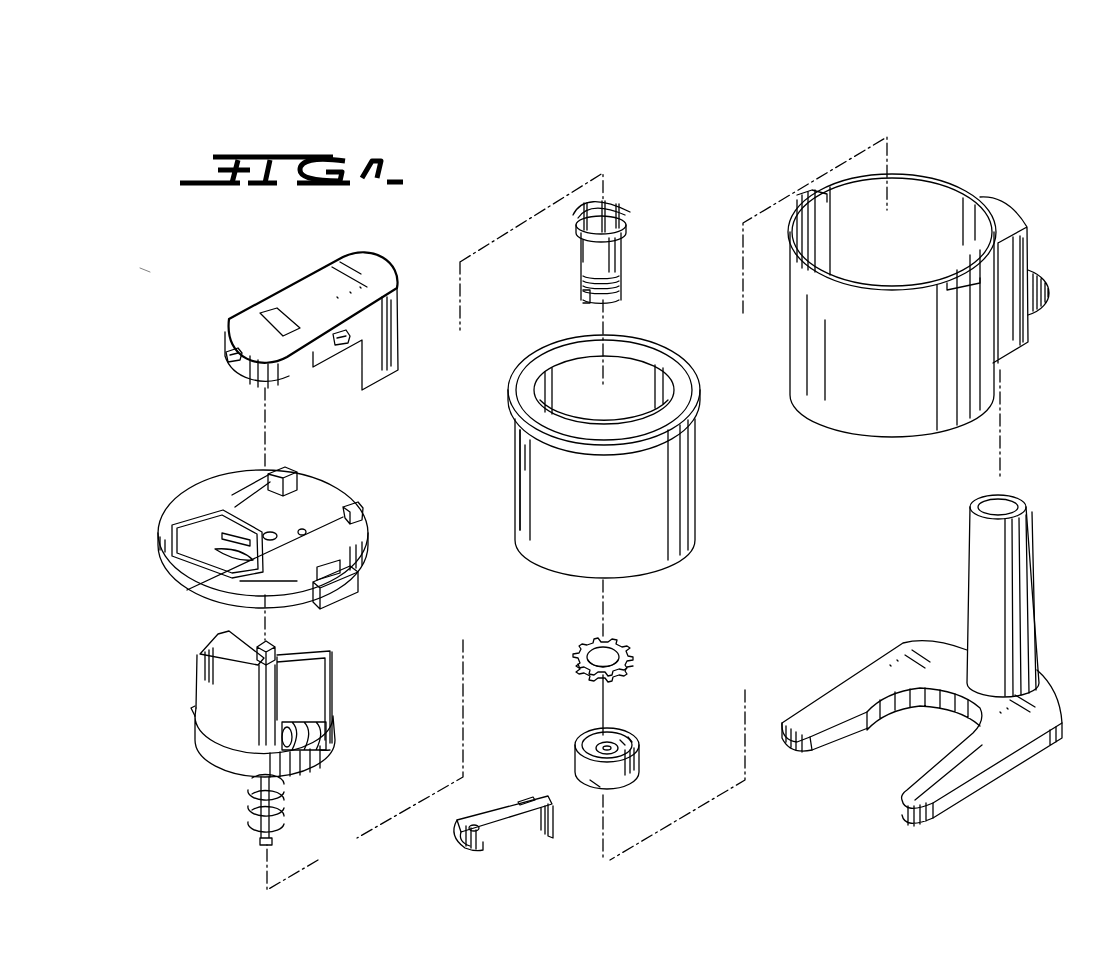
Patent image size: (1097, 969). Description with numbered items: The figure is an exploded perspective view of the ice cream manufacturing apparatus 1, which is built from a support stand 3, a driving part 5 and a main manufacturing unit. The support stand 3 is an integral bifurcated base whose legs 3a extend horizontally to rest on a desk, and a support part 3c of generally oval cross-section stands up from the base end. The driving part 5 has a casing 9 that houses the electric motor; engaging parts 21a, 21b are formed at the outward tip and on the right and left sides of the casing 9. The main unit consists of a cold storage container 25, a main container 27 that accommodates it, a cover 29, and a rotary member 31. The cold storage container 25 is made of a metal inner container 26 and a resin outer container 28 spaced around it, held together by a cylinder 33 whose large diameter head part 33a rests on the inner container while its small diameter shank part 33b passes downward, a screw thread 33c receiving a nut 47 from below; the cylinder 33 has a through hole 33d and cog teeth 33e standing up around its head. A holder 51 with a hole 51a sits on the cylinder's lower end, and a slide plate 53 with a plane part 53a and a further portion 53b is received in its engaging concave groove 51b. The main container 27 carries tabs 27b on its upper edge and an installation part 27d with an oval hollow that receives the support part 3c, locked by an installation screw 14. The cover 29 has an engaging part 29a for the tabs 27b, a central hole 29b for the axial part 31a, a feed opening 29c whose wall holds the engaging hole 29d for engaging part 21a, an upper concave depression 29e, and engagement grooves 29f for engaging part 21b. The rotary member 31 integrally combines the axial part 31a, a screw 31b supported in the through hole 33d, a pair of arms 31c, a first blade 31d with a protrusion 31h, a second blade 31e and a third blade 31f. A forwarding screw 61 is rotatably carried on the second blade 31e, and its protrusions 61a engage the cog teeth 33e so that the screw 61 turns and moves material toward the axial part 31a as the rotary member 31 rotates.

The ice cream manufacturing apparatus 1 is at (136, 272).
The support stand 3 is at (895, 650).
The legs 3a is at (940, 775).
The support part 3c is at (968, 606).
The driving part 5 is at (320, 270).
The casing 9 is at (397, 318).
The installation screw 14 is at (1044, 293).
The engaging part 21a is at (232, 362).
The engaging part 21b is at (338, 346).
The cold storage container 25 is at (727, 477).
The inner container 26 is at (633, 373).
The main container 27 is at (818, 420).
The tabs 27b is at (960, 275).
The installation part 27d is at (1030, 252).
The outer container 28 is at (528, 482).
The cover 29 is at (318, 505).
The engaging part 29a is at (358, 588).
The hole 29b is at (276, 532).
The opening 29c is at (228, 557).
The engaging hole 29d is at (222, 538).
The upper concave depression 29e is at (304, 535).
The engagement grooves 29f is at (292, 472).
The rotary member 31 is at (357, 709).
The axial part 31a is at (259, 687).
The screw 31b is at (286, 808).
The arms 31c is at (276, 652).
The first blade 31d is at (238, 750).
The second blade 31e is at (287, 727).
The third blade 31f is at (333, 668).
The protrusion 31h is at (207, 748).
The cylinder 33 is at (658, 257).
The large diameter head part 33a is at (628, 224).
The small diameter shank part 33b is at (628, 274).
The screw thread 33c is at (628, 292).
The through hole 33d is at (584, 242).
The cog teeth 33e is at (621, 214).
The nut 47 is at (636, 658).
The holder 51 is at (665, 763).
The hole 51a is at (628, 736).
The engaging concave groove 51b is at (590, 782).
The slide plate 53 is at (516, 832).
The plane part 53a is at (524, 812).
The clip hole 53b is at (472, 822).
The screw 61 is at (330, 733).
The protrusions 61a is at (318, 752).